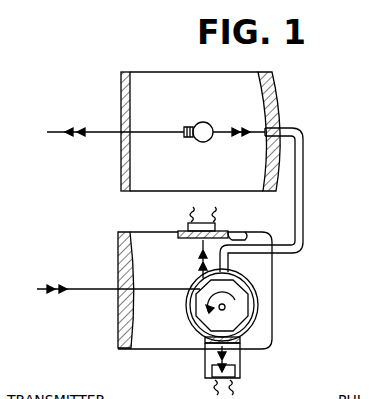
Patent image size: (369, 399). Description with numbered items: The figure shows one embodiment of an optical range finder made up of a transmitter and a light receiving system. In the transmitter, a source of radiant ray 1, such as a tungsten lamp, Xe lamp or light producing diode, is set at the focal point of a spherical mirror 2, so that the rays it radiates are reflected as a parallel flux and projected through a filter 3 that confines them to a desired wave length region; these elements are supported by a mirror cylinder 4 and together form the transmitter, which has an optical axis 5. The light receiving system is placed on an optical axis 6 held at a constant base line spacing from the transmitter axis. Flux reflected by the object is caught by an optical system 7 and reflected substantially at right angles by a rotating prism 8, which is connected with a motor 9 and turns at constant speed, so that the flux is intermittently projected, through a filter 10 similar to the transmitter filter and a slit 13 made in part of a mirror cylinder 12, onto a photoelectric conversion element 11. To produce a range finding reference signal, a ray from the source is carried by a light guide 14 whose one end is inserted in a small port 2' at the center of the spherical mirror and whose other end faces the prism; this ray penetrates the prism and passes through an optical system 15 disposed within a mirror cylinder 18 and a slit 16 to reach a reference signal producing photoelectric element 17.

The source of radiant ray 1 is at (200, 122).
The spherical mirror 2 is at (284, 131).
The small port 2' is at (291, 118).
The filter 3 is at (121, 87).
The mirror cylinder 4 is at (158, 72).
The optical axis 5 is at (57, 131).
The optical axis 6 is at (46, 288).
The optical system 7 is at (118, 310).
The rotating prism 8 is at (205, 306).
The motor 9 is at (193, 330).
The filter 10 is at (238, 240).
The photoelectric conversion element 11 is at (190, 227).
The mirror cylinder 12 is at (146, 350).
The slit 13 is at (200, 238).
The light guide 14 is at (304, 190).
The optical system 15 is at (240, 363).
The slit 16 is at (210, 372).
The reference signal producing photoelectric element 17 is at (243, 372).
The mirror cylinder 18 is at (205, 358).